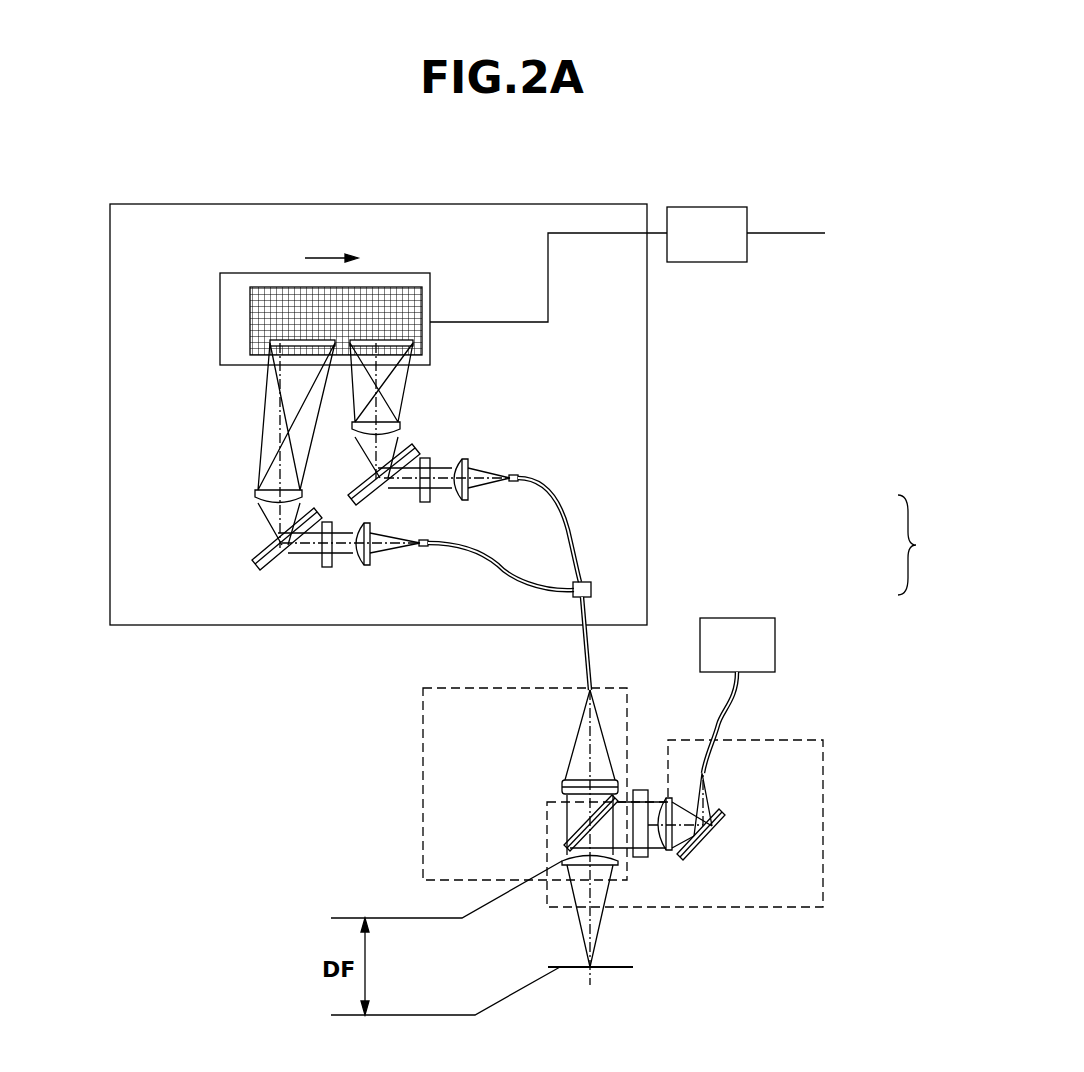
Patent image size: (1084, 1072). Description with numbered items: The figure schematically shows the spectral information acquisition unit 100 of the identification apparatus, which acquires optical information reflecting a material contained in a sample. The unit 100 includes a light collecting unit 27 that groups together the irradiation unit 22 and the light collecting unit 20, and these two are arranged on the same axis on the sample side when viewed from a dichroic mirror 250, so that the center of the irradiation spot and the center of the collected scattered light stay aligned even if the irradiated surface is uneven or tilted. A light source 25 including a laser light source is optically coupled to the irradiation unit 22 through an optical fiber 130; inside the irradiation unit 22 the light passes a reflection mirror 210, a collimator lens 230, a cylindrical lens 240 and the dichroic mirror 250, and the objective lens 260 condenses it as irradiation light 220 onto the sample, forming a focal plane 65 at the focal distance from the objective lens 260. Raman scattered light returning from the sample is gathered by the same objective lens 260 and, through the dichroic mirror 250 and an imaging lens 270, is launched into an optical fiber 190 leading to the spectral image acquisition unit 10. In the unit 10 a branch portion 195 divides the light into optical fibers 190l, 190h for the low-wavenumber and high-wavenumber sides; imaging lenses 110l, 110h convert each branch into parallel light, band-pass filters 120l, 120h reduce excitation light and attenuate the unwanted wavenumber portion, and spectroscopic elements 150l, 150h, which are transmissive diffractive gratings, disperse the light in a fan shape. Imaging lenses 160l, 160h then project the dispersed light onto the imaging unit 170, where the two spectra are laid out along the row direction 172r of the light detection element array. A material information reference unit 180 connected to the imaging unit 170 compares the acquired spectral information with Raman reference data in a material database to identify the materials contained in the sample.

The spectral information acquisition unit 100 is at (95, 185).
The spectral image acquisition unit 10 is at (110, 362).
The imaging unit 170 is at (220, 318).
The row direction 172r is at (333, 245).
The material information reference unit 180 is at (707, 207).
The imaging lens 160l is at (255, 493).
The spectroscopic element 150l is at (252, 565).
The band-pass filter 120l is at (327, 568).
The imaging lens 110l is at (368, 566).
The optical fiber 190l is at (525, 575).
The imaging lens 160h is at (402, 426).
The spectroscopic element 150h is at (420, 447).
The band-pass filter 120h is at (430, 457).
The imaging lens 110h is at (466, 497).
The optical fiber 190h is at (573, 537).
The branch portion 195 is at (592, 586).
The optical fiber 190 is at (586, 657).
The light collecting unit 20 is at (627, 692).
The imaging lens 270 is at (562, 786).
The dichroic mirror 250 is at (567, 843).
The objective lens 260 is at (562, 862).
The irradiation light 220 is at (577, 920).
The focal plane 65 is at (620, 966).
The irradiation unit 22 is at (825, 762).
The cylindrical lens 240 is at (641, 858).
The collimator lens 230 is at (672, 850).
The reflection mirror 210 is at (723, 812).
The light source 25 is at (748, 618).
The optical fiber 130 is at (735, 714).
The light collecting unit 27 is at (927, 545).